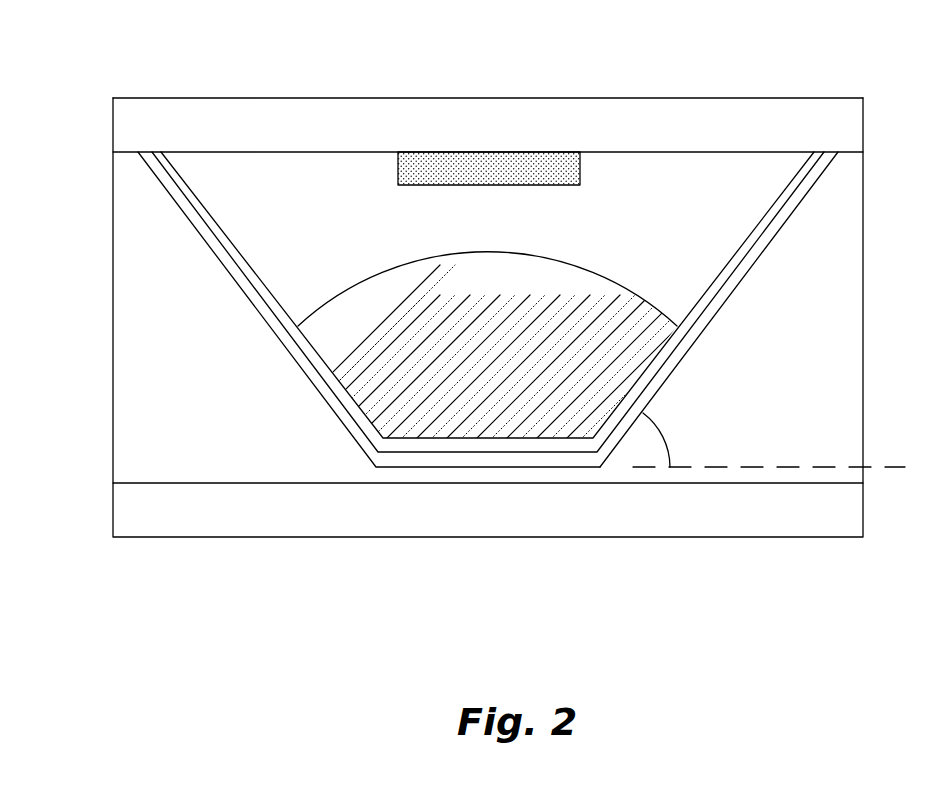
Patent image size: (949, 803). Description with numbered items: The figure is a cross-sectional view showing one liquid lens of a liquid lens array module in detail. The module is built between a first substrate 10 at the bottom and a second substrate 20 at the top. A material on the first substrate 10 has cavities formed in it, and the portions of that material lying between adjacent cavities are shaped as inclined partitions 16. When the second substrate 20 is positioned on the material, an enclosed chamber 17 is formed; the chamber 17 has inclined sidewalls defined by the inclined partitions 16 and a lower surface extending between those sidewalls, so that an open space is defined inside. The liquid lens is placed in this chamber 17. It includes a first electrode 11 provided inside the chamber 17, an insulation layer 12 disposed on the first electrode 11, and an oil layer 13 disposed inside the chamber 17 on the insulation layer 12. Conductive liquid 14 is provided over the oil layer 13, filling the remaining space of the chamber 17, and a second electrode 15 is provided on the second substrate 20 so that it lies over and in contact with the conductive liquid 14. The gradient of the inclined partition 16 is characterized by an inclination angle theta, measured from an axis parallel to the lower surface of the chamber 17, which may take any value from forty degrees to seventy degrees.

The first substrate 10 is at (284, 512).
The first electrode 11 is at (485, 458).
The insulation layer 12 is at (555, 443).
The oil layer 13 is at (578, 378).
The conductive liquid 14 is at (723, 205).
The second electrode 15 is at (547, 167).
The inclined partition 16 is at (133, 345).
The chamber 17 is at (640, 420).
The second substrate 20 is at (430, 130).